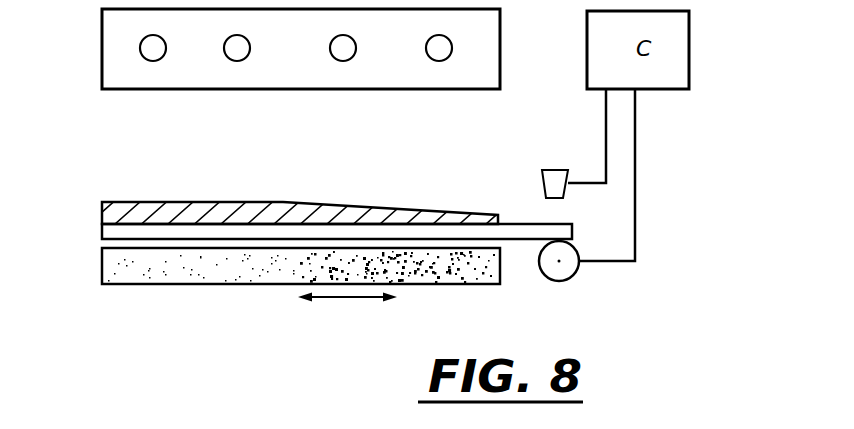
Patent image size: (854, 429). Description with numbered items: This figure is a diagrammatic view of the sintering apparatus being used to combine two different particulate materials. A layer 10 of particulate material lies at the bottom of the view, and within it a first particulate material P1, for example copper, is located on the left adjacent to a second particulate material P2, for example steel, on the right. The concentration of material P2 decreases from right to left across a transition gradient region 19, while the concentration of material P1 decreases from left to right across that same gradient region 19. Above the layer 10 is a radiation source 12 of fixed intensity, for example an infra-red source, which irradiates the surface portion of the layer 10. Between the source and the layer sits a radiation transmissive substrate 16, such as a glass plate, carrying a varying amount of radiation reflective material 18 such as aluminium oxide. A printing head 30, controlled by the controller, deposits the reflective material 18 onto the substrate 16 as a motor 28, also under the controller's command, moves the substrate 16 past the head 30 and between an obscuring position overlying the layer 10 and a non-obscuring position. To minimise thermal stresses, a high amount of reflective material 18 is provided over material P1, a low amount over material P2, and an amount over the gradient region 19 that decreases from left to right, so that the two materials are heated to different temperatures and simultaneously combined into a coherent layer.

The layer of particulate material 10 is at (110, 265).
The radiation source 12 is at (112, 70).
The radiation transmissive substrate 16 is at (108, 235).
The radiation reflective material 18 is at (279, 212).
The transition gradient region 19 is at (333, 300).
The motor 28 is at (568, 270).
The printing head 30 is at (548, 183).
The particulate material P1 is at (222, 270).
The particulate material P2 is at (435, 270).